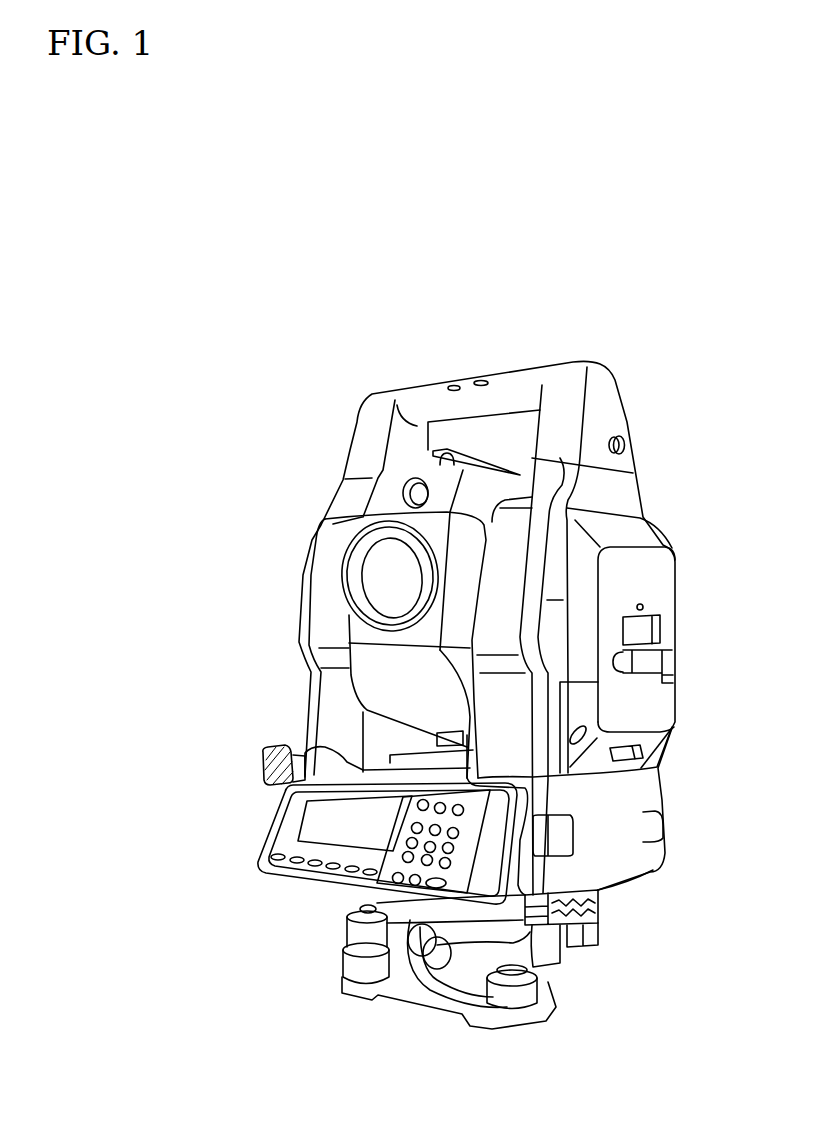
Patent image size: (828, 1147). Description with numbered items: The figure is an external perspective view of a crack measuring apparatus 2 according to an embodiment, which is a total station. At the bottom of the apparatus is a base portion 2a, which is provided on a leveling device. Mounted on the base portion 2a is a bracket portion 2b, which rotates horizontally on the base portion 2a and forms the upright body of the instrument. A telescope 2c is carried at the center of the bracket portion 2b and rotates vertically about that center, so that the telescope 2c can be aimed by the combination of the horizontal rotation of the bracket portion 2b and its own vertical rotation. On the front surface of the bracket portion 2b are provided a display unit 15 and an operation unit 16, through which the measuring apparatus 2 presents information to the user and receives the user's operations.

The crack measuring apparatus 2 is at (640, 328).
The base portion 2a is at (598, 940).
The bracket portion 2b is at (333, 718).
The telescope 2c is at (387, 572).
The display unit 15 is at (318, 828).
The operation unit 16 is at (423, 847).